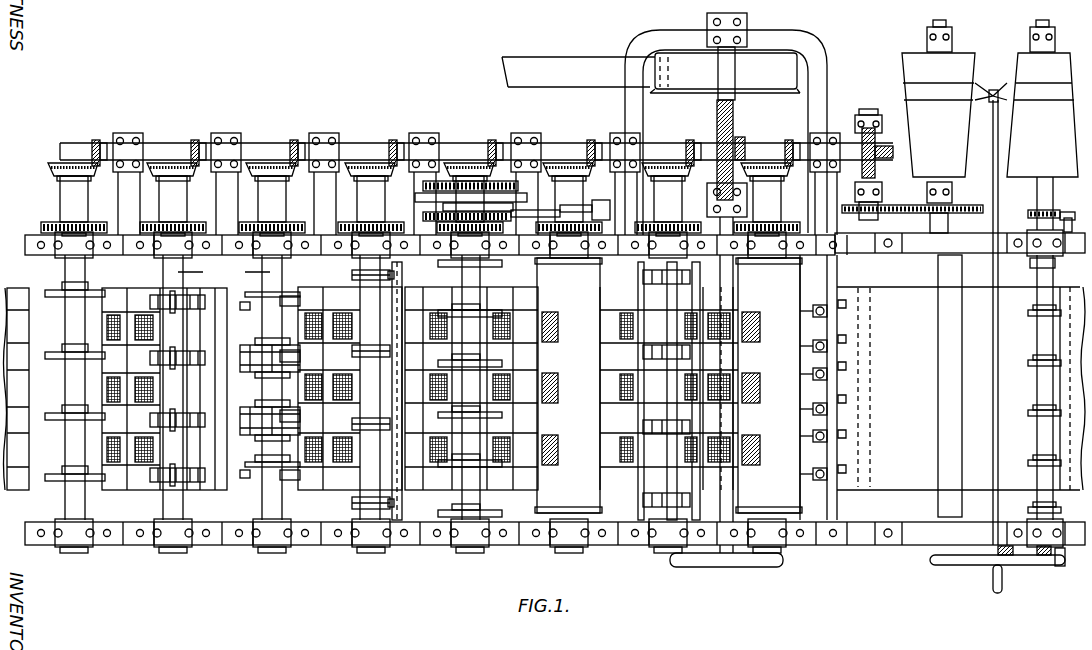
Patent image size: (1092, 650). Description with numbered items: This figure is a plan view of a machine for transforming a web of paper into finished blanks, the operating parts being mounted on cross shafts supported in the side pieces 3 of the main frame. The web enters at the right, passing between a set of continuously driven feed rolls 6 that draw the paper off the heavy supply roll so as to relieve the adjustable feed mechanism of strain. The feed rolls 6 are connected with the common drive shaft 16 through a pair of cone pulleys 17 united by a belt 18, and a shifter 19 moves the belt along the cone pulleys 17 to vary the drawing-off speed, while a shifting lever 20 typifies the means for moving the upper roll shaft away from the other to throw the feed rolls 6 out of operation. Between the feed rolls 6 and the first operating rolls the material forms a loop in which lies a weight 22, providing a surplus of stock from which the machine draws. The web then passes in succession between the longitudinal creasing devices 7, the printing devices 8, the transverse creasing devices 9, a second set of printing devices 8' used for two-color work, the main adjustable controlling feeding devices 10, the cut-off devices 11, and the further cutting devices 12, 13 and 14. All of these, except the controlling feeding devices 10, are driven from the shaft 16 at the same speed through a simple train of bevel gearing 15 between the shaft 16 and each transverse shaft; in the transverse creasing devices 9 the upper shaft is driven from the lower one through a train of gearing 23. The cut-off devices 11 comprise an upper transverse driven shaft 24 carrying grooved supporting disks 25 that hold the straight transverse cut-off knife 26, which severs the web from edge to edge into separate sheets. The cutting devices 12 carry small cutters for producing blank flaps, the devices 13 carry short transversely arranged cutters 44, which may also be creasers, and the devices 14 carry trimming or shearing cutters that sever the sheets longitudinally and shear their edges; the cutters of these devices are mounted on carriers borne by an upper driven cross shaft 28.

The side pieces 3 is at (36, 238).
The feed rolls 6 is at (1033, 362).
The longitudinal creasing devices 7 is at (818, 387).
The printing devices 8 is at (769, 385).
The second printing devices 8' is at (568, 385).
The transverse creasing devices 9 is at (668, 400).
The controlling feeding devices 10 is at (470, 427).
The cut-off devices 11 is at (341, 388).
The cutting devices 12 is at (268, 387).
The cutting devices 13 is at (164, 389).
The cutting devices 14 is at (55, 387).
The bevel gearing 15 is at (187, 174).
The common shaft 16 is at (365, 152).
The cone pulleys 17 is at (960, 126).
The belt 18 is at (980, 88).
The shifter 19 is at (993, 155).
The shifting lever 20 is at (1028, 560).
The weight 22 is at (947, 377).
The train of gearing 23 is at (180, 226).
The upper transverse driven shaft 24 is at (365, 365).
The grooved supporting disks 25 is at (352, 275).
The cut-off knife 26 is at (400, 293).
The upper driven cross shaft 28 is at (224, 270).
The short transversely arranged cutters 44 is at (177, 387).